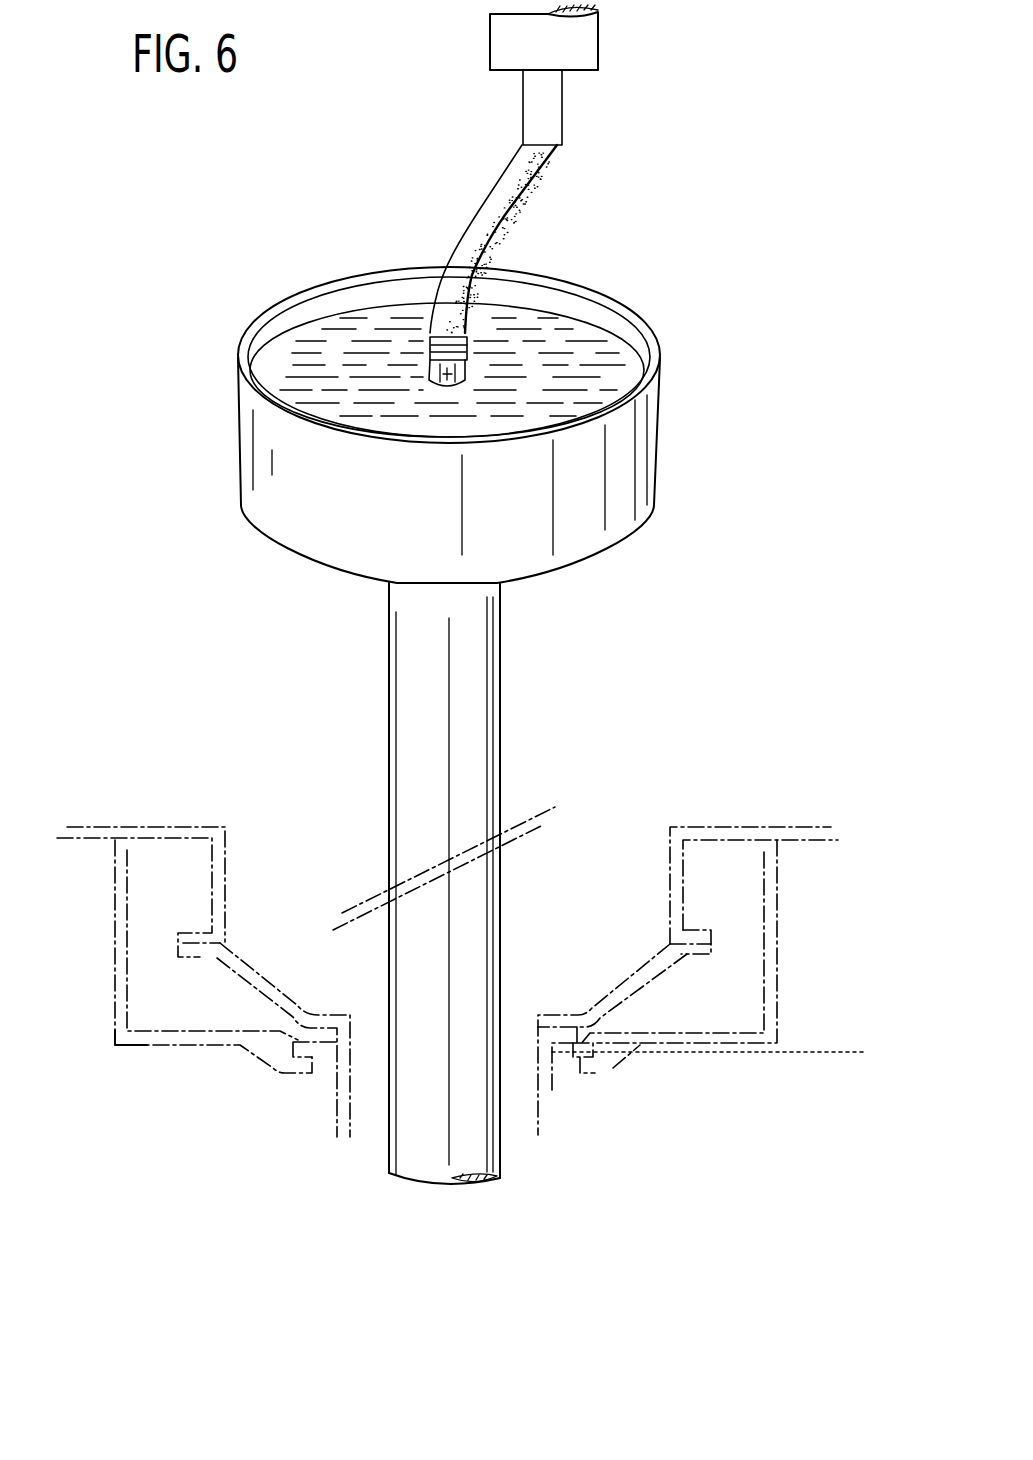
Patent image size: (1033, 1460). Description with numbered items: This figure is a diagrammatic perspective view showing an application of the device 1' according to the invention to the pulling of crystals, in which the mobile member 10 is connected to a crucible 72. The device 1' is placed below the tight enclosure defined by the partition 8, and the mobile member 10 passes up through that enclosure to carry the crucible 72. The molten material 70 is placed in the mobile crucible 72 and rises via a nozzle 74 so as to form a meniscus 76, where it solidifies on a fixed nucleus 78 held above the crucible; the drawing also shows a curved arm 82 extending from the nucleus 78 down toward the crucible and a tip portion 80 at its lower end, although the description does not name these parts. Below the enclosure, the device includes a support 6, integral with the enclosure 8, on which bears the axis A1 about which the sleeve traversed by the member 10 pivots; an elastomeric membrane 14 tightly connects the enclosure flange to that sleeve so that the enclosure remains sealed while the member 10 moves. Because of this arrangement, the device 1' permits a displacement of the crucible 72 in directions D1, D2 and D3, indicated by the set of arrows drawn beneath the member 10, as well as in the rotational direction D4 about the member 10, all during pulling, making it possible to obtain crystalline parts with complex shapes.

The fixed nucleus 78 is at (545, 105).
The curved arm 82 is at (492, 205).
The nozzle 80 is at (433, 322).
The molten material 70 is at (612, 366).
The crucible 72 is at (258, 322).
The nozzle 74 is at (440, 378).
The meniscus 76 is at (467, 348).
The mobile member 10 is at (425, 648).
The direction D4 is at (368, 687).
The enclosure 8 is at (77, 827).
The support 6 is at (142, 1045).
The device 1' is at (702, 923).
The elastomeric membrane 14 is at (642, 962).
The axis A1 is at (822, 1053).
The direction D3 is at (438, 1330).
The direction D1 is at (404, 1318).
The direction D2 is at (492, 1284).